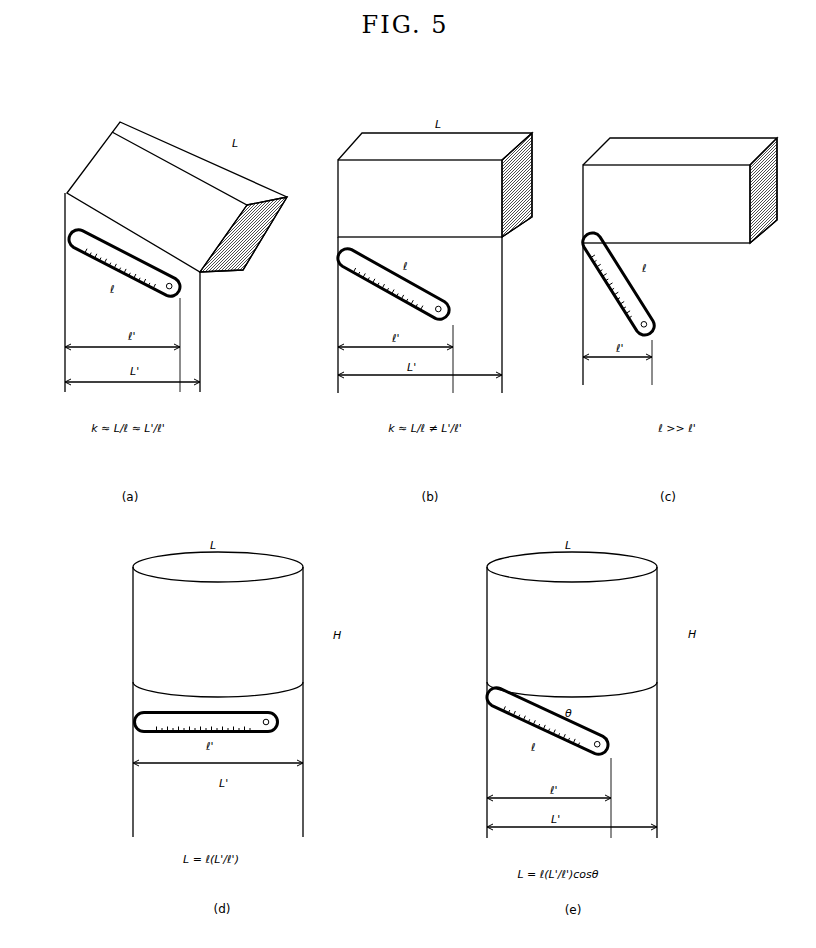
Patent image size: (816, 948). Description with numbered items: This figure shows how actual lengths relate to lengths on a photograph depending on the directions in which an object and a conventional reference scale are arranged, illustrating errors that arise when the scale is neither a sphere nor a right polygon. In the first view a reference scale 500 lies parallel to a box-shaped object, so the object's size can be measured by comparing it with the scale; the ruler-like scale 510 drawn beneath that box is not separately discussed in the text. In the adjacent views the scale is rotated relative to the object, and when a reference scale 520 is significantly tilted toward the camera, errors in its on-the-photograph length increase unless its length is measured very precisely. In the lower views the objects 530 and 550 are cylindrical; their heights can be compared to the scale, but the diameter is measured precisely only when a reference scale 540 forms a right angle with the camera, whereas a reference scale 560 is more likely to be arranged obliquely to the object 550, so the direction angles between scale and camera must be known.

The reference scale 500 is at (182, 138).
The ruler (measuring scale) 510 is at (92, 260).
The reference scale 520 is at (657, 315).
The object 530 is at (305, 612).
The reference scale 540 is at (282, 717).
The object 550 is at (650, 625).
The reference scale 560 is at (498, 710).